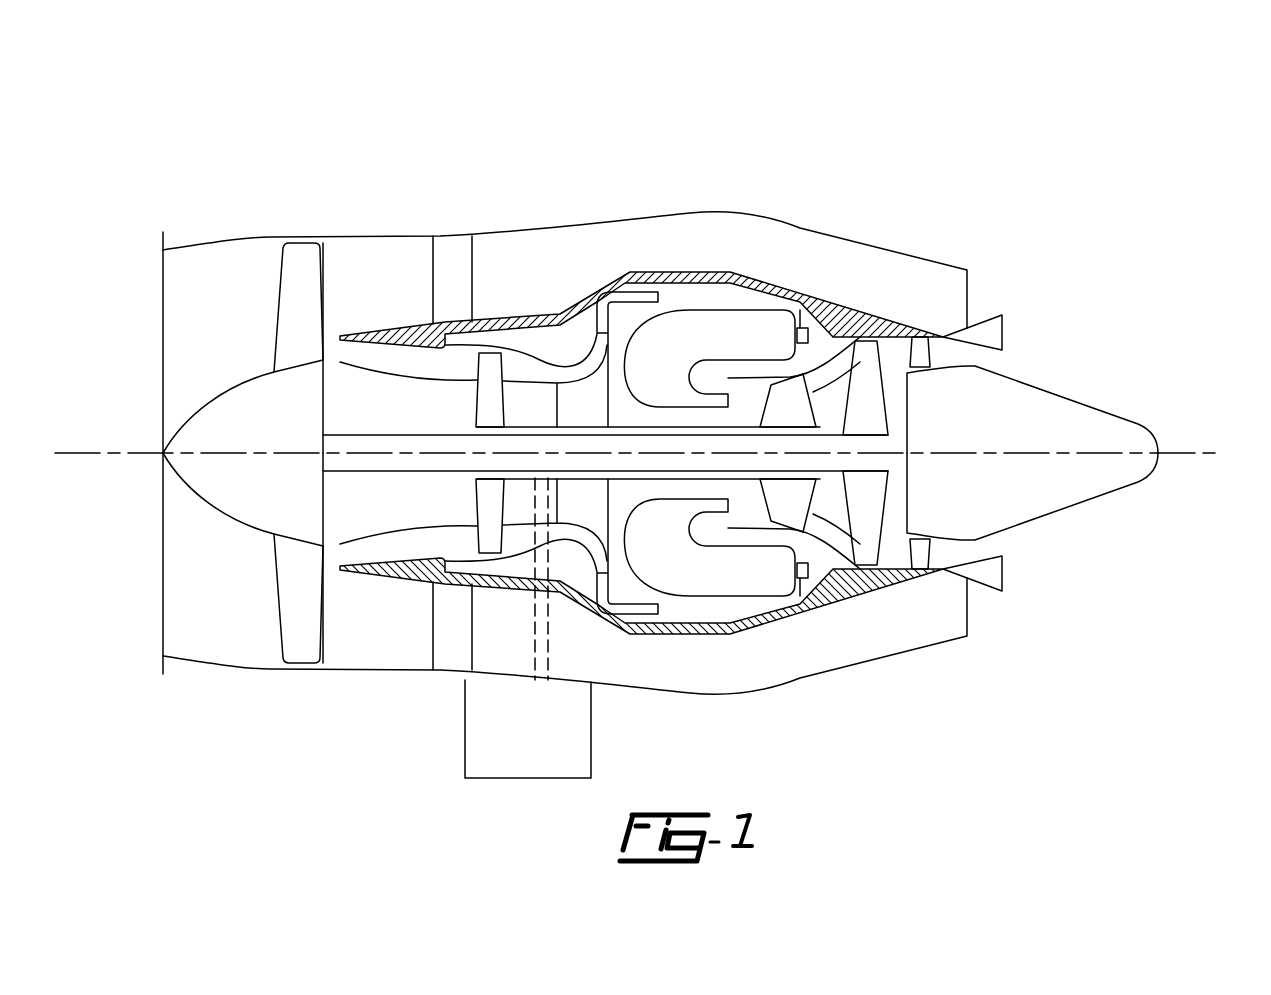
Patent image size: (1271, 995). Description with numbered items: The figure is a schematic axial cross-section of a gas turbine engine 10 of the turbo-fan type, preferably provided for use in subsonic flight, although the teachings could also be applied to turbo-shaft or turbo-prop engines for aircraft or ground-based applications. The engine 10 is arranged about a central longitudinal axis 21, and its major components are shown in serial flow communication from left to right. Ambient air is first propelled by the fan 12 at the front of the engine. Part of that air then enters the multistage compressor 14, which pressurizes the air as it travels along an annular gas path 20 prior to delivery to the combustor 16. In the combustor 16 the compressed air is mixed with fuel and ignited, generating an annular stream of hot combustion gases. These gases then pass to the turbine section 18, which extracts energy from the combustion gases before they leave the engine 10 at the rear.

The gas turbine engine 10 is at (850, 170).
The fan 12 is at (293, 588).
The multistage compressor 14 is at (538, 386).
The combustor 16 is at (710, 327).
The turbine section 18 is at (828, 512).
The annular gas path 20 is at (510, 366).
The central longitudinal axis 21 is at (1184, 455).